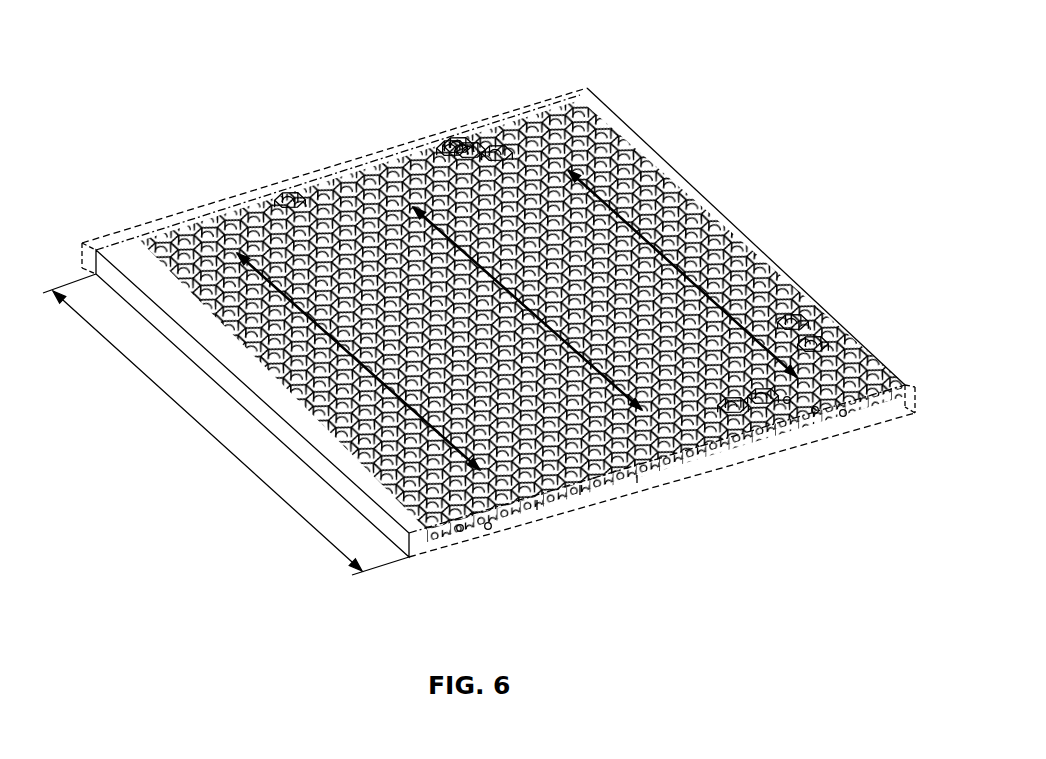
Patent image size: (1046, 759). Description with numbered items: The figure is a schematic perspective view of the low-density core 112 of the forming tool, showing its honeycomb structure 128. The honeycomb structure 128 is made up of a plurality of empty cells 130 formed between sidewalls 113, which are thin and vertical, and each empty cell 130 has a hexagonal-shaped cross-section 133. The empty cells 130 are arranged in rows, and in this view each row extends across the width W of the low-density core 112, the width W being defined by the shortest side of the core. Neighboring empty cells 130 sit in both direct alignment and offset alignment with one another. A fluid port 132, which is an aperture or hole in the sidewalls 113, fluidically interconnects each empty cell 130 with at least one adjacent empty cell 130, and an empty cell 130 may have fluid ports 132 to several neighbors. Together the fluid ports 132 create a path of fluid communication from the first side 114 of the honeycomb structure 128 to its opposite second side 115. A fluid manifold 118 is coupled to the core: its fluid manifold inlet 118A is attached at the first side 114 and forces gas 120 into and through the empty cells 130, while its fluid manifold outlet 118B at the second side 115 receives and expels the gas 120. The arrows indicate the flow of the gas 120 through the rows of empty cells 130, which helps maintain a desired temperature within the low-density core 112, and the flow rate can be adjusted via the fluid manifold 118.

The low-density core 112 is at (343, 174).
The sidewalls 113 is at (537, 510).
The first side 114 is at (637, 483).
The second side 115 is at (290, 192).
The fluid manifold 118 is at (914, 382).
The fluid manifold inlet 118A is at (903, 412).
The fluid manifold outlet 118B is at (113, 236).
The gas 120 is at (642, 235).
The honeycomb structure 128 is at (458, 134).
The empty cells 130 is at (469, 143).
The fluid port 132 is at (787, 402).
The hexagonal-shaped cross-section 133 is at (452, 140).
The width W is at (212, 436).